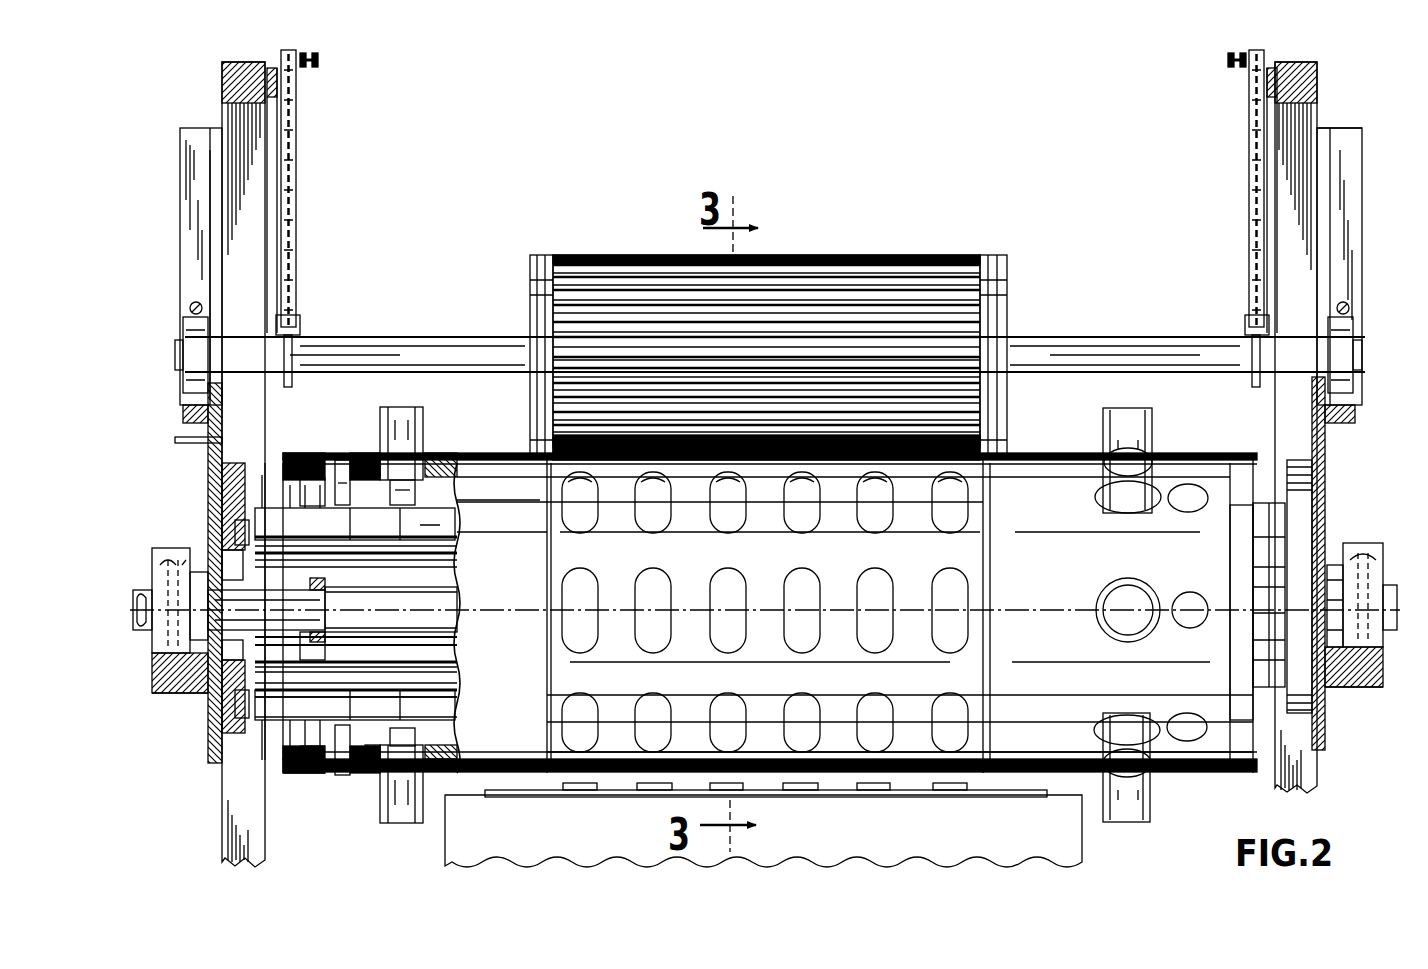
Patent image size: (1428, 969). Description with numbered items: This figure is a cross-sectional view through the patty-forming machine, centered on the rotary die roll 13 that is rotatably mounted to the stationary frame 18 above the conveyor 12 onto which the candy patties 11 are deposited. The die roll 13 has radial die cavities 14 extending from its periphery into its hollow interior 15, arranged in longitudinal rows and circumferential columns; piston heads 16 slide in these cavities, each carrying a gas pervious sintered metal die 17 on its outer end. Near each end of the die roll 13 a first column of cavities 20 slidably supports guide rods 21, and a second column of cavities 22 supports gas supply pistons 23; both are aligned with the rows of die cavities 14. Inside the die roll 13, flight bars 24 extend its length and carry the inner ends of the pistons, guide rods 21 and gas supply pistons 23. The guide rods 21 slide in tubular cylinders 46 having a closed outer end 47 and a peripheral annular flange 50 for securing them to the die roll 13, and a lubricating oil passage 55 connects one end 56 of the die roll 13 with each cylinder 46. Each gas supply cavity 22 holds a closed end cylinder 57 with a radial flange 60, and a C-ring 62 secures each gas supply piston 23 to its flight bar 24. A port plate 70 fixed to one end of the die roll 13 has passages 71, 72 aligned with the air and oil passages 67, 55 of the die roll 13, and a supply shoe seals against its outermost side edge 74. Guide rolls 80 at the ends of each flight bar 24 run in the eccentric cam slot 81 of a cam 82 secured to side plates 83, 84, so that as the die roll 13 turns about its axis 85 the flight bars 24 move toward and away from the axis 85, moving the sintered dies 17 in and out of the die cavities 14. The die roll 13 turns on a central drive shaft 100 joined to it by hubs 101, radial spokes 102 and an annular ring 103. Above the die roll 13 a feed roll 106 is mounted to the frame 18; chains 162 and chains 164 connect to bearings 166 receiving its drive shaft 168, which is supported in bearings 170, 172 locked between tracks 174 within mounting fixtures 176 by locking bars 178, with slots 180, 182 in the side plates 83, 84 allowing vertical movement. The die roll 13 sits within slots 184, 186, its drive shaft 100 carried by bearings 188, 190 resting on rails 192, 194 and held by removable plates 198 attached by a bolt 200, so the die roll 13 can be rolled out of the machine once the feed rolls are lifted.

The candy patties 11 is at (838, 795).
The conveyor 12 is at (615, 790).
The die roll 13 is at (1022, 455).
The die cavities 14 is at (800, 580).
The hollow interior 15 is at (470, 478).
The piston heads 16 is at (810, 628).
The sintered metal die 17 is at (775, 632).
The stationary frame 18 is at (220, 840).
The guide rod cavities 20 is at (465, 456).
The guide rods 21 is at (410, 506).
The gas supply cavities 22 is at (340, 778).
The gas supply pistons 23 is at (345, 702).
The flight bars 24 is at (458, 700).
The cylinders 46 is at (385, 800).
The closed outer end 47 is at (400, 825).
The peripheral annular flange 50 is at (448, 797).
The lubricating oil passage 55 is at (362, 508).
The end of die roll 56 is at (305, 455).
The closed end cylinder 57 is at (360, 455).
The radial flange 60 is at (1200, 628).
The C-ring 62 is at (330, 516).
The air flow passage 67 is at (340, 458).
The port plate 70 is at (278, 766).
The air passages 71 is at (292, 776).
The lubricant passage 72 is at (300, 740).
The outermost side edge 74 is at (283, 478).
The guide rolls 80 is at (222, 478).
The eccentric cam slot 81 is at (237, 525).
The cam 82 is at (245, 458).
The side plate 83 is at (208, 440).
The side plate 84 is at (1325, 452).
The axis 85 is at (1015, 612).
The drive shaft 100 is at (457, 610).
The hubs 101 is at (312, 604).
The radial spokes 102 is at (320, 650).
The annular ring 103 is at (312, 776).
The feed roll 106 is at (838, 252).
The chains 162 is at (297, 222).
The chains 164 is at (320, 62).
The bearings 166 is at (300, 336).
The drive shaft 168 is at (462, 340).
The bearing 170 is at (183, 326).
The bearing 172 is at (1350, 330).
The tracks 174 is at (185, 142).
The mounting fixtures 176 is at (183, 413).
The locking bars 178 is at (190, 304).
The slot 180 is at (205, 216).
The slot 182 is at (1322, 135).
The slot 184 is at (225, 608).
The slot 186 is at (1333, 565).
The bearing 188 is at (195, 560).
The bearing 190 is at (1348, 546).
The rail 192 is at (170, 695).
The rail 194 is at (1355, 690).
The locking and supporting plate 198 is at (140, 580).
The bolt 200 is at (172, 660).